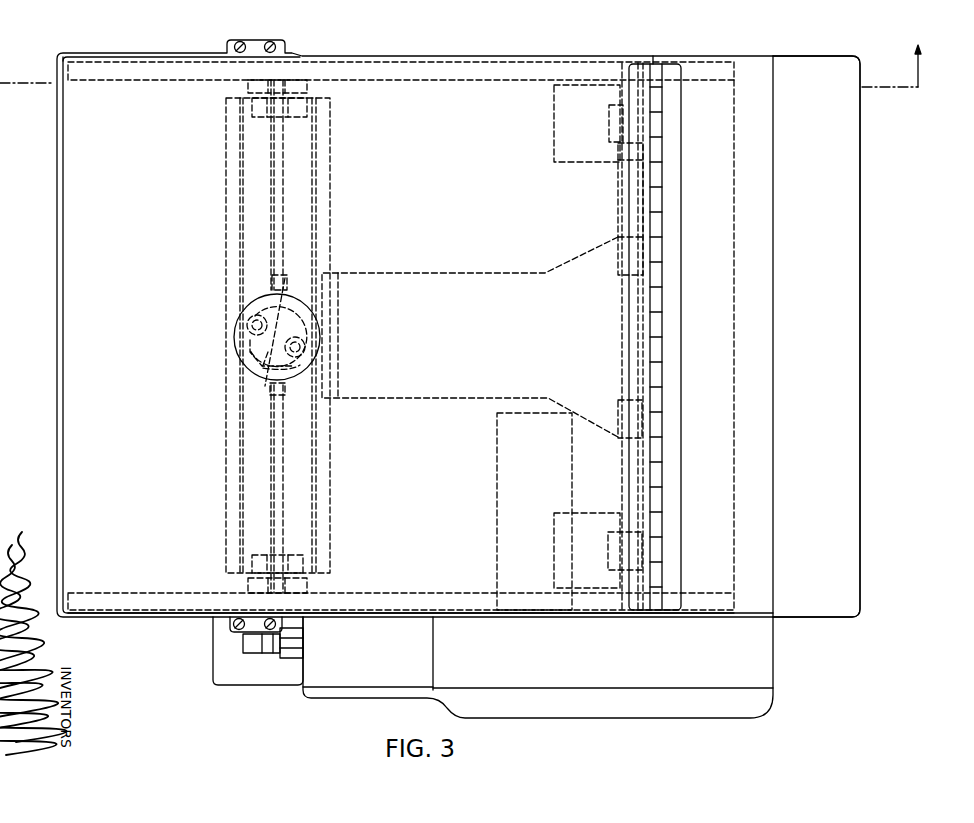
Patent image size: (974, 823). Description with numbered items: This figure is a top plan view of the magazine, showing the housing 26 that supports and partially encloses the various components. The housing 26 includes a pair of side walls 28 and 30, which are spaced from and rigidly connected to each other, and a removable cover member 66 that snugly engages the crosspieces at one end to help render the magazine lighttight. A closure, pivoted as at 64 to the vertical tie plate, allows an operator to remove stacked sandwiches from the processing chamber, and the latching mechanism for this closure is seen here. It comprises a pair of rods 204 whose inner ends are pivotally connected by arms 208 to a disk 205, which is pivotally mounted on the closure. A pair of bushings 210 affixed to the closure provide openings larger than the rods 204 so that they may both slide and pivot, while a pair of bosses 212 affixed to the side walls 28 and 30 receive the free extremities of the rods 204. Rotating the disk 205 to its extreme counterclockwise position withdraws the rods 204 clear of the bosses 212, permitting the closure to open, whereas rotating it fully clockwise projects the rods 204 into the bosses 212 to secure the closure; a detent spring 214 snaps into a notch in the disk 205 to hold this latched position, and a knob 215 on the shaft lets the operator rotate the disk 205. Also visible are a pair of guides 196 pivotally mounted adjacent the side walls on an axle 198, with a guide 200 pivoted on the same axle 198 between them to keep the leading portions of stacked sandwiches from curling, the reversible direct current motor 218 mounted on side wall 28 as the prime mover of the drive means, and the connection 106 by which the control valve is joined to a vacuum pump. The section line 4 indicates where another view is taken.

The housing 26 is at (721, 95).
The side wall 30 is at (462, 67).
The side wall 28 is at (358, 603).
The removable cover member 66 is at (803, 308).
The pivot 64 is at (662, 306).
The rods 204 is at (277, 161).
The bosses 212 is at (250, 87).
The bushings 210 is at (298, 113).
The arms 208 is at (263, 288).
The disk 205 is at (250, 344).
The knob 215 is at (240, 327).
The detent spring 214 is at (296, 352).
The guide 200 is at (360, 273).
The reversible direct current motor 218 is at (500, 489).
The guides 196 is at (580, 162).
The axle 198 is at (618, 198).
The vacuum pump connection 106 is at (246, 642).
The section line 4- 4 is at (460, 54).